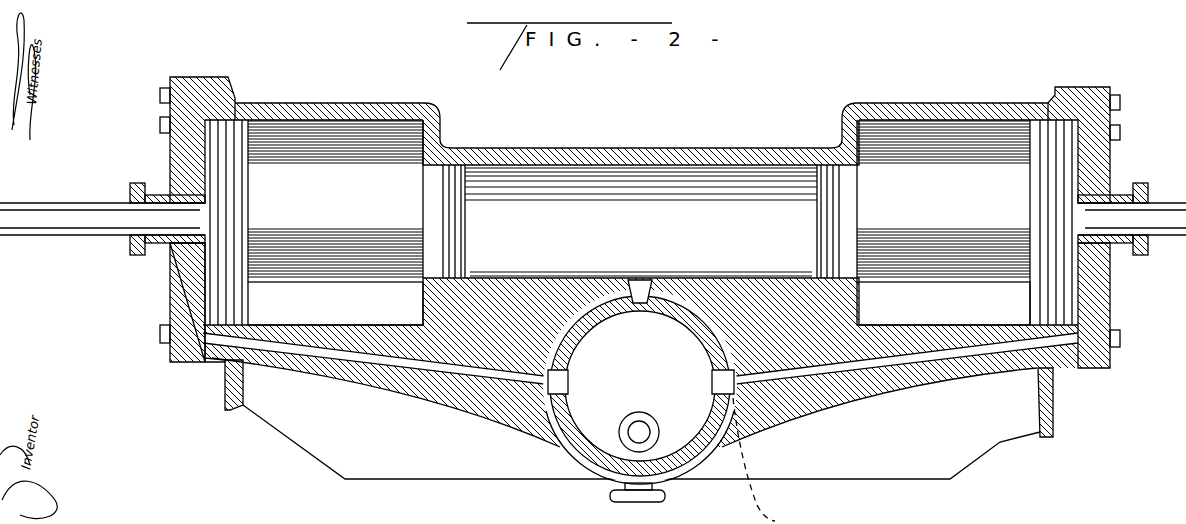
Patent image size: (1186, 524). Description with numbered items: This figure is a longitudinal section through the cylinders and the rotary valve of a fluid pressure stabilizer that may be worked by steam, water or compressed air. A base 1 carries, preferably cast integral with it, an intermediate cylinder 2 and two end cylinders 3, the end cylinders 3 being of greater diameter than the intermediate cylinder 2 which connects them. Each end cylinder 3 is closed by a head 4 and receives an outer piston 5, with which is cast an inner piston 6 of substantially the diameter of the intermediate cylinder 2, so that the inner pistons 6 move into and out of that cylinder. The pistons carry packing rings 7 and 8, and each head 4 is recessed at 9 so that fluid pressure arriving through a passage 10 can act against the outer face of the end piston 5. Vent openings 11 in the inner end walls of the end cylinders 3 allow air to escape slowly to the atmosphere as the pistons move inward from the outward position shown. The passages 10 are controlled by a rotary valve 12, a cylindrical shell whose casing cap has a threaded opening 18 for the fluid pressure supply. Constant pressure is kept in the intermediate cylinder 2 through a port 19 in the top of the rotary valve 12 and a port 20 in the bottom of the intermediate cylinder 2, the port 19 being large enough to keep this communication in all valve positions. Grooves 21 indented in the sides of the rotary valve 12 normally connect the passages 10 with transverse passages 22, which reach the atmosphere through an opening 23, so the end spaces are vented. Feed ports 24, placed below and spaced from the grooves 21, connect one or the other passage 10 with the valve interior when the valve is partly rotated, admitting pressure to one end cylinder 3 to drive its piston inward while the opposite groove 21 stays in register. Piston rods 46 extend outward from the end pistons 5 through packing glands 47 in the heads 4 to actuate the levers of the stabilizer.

The base 1 is at (1055, 428).
The intermediate cylinder 2 is at (676, 152).
The end cylinder 3 is at (370, 108).
The head 4 is at (185, 360).
The piston 5 is at (255, 140).
The inner piston 6 is at (639, 222).
The packing ring 7 is at (238, 130).
The packing ring 8 is at (478, 160).
The recess 9 is at (193, 360).
The passage 10 is at (340, 357).
The vent opening 11 is at (443, 128).
The rotary valve 12 is at (638, 432).
The threaded opening 18 is at (610, 427).
The port 19 is at (637, 305).
The port 20 is at (638, 280).
The groove 21 is at (562, 372).
The transverse passage 22 is at (761, 461).
The opening 23 is at (658, 500).
The feed port 24 is at (722, 396).
The piston rod 46 is at (22, 236).
The packing gland 47 is at (150, 257).